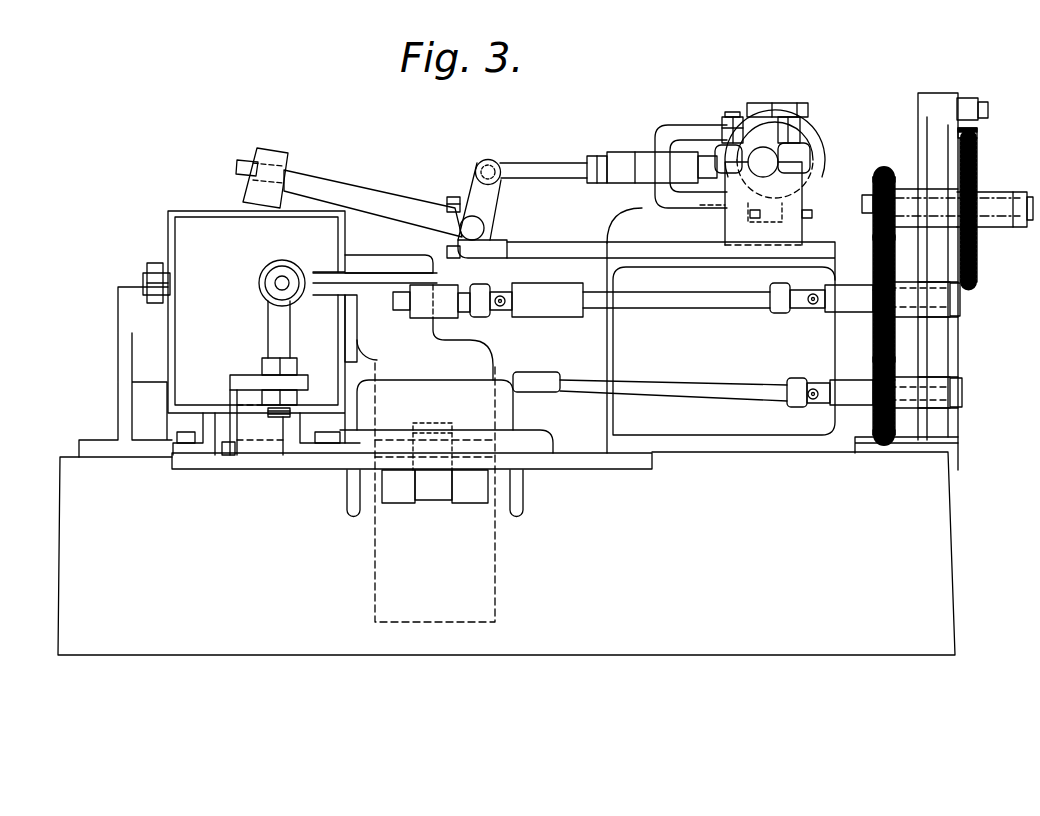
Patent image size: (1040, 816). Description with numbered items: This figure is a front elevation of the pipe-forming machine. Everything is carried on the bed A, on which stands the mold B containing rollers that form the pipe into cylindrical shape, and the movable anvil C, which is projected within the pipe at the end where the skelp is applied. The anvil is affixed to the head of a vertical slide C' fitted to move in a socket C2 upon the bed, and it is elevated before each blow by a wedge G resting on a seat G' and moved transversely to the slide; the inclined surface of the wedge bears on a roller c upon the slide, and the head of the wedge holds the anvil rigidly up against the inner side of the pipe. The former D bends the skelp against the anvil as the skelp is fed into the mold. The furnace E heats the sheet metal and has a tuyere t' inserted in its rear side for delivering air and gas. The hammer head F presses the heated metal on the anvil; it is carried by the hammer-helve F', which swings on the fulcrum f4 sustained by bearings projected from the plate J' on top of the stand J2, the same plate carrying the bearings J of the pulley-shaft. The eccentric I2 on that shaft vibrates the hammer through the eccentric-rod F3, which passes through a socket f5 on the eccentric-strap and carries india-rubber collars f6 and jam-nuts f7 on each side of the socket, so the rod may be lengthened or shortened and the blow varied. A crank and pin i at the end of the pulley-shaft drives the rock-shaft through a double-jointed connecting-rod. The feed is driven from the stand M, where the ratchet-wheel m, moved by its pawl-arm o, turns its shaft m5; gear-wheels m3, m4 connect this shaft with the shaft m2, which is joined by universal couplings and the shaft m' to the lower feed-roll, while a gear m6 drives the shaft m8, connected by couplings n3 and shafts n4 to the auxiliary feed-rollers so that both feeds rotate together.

The bed A is at (506, 553).
The mold B is at (118, 352).
The movable anvil C is at (419, 317).
The vertical slide C' is at (450, 492).
The socket C2 is at (513, 410).
The roller c is at (437, 424).
The former D is at (358, 273).
The furnace E is at (251, 333).
The head of the hammer F is at (256, 168).
The hammer-helve F' is at (395, 209).
The eccentric-rod F3 is at (543, 160).
The fulcrum of the hammer-helve f4 is at (484, 228).
The socket f5 is at (650, 160).
The india-rubber collars f6 is at (623, 186).
The jam-nuts f7 is at (592, 152).
The wedge G is at (435, 493).
The seat G' is at (424, 522).
The eccentric I2 is at (808, 180).
The bearings J is at (671, 246).
The plate J' is at (666, 224).
The stand J2 is at (613, 338).
The stand M is at (933, 93).
The ratchet-wheel m is at (983, 190).
The shaft m' is at (771, 308).
The shaft m2 is at (890, 303).
The gear-wheel m3 is at (873, 255).
The gear-wheel m4 is at (885, 177).
The shaft of the ratchet-wheel m5 is at (880, 211).
The gear m6 is at (873, 368).
The shaft m8 is at (883, 403).
The couplings n3 is at (546, 374).
The shafts n4 is at (707, 385).
The pawl-arm o is at (985, 228).
The crank and pin i is at (428, 316).
The tuyere t' is at (261, 357).